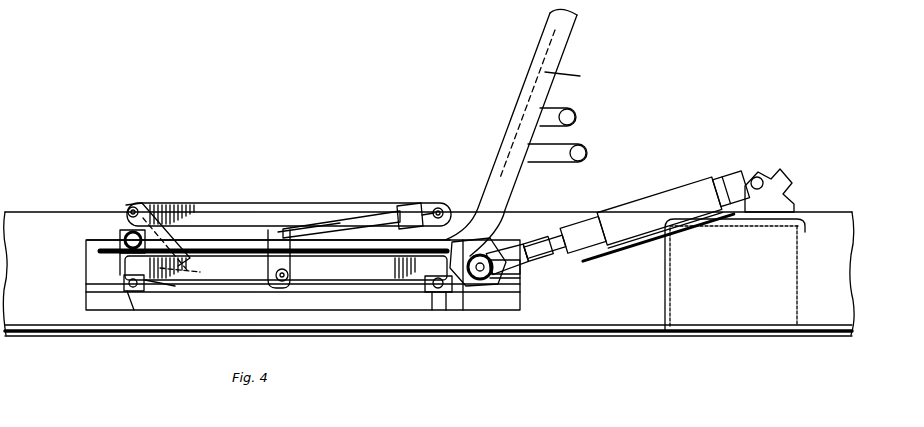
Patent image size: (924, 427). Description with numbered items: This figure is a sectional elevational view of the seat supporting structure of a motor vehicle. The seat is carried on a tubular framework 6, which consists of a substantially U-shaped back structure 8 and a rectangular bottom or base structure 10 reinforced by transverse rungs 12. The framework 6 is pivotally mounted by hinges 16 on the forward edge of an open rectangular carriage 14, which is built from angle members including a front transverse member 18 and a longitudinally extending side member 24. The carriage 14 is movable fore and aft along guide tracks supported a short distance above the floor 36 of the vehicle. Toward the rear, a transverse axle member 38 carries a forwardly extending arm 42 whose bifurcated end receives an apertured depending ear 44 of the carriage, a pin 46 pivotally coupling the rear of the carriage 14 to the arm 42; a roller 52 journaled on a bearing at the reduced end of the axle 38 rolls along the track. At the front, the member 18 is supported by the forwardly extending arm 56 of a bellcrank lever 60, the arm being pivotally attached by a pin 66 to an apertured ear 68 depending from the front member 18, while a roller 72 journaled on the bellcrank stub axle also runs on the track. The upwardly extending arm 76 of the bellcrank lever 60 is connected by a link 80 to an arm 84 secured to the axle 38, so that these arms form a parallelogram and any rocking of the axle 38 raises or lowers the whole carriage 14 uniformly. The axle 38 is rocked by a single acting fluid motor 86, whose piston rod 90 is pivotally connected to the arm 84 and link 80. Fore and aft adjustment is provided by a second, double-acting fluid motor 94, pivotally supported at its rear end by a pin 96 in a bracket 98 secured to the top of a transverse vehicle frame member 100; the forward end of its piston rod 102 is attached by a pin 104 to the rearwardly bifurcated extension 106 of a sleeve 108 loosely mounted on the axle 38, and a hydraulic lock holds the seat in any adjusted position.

The framework 6 is at (498, 146).
The back structure 8 is at (567, 77).
The bottom or base structure 10 is at (340, 238).
The transverse rungs 12 is at (576, 125).
The carriage or supporting member 14 is at (234, 270).
The hinges 16 is at (120, 240).
The front transverse angle member 18 is at (124, 260).
The side angle member 24 is at (264, 268).
The floor 36 is at (72, 329).
The transverse axle member 38 is at (486, 279).
The arm 42 is at (452, 292).
The depending ears 44 is at (428, 284).
The pins 46 is at (440, 292).
The roller 52 is at (500, 272).
The arm 56 is at (150, 280).
The bellcrank lever 60 is at (126, 210).
The pins 66 is at (122, 282).
The apertured ears 68 is at (130, 292).
The roller 72 is at (186, 272).
The upwardly extending arm 76 is at (140, 222).
The link 80 is at (233, 208).
The arm 84 is at (448, 212).
The single acting fluid motor 86 is at (283, 230).
The piston rod 90 is at (372, 226).
The second fluid motor 94 is at (661, 214).
The pin 96 is at (758, 177).
The bracket 98 is at (789, 201).
The transverse vehicle frame member 100 is at (800, 283).
The piston rod 102 is at (564, 241).
The pin 104 is at (478, 262).
The rearwardly bifurcated extension 106 is at (520, 254).
The sleeve 108 is at (500, 281).